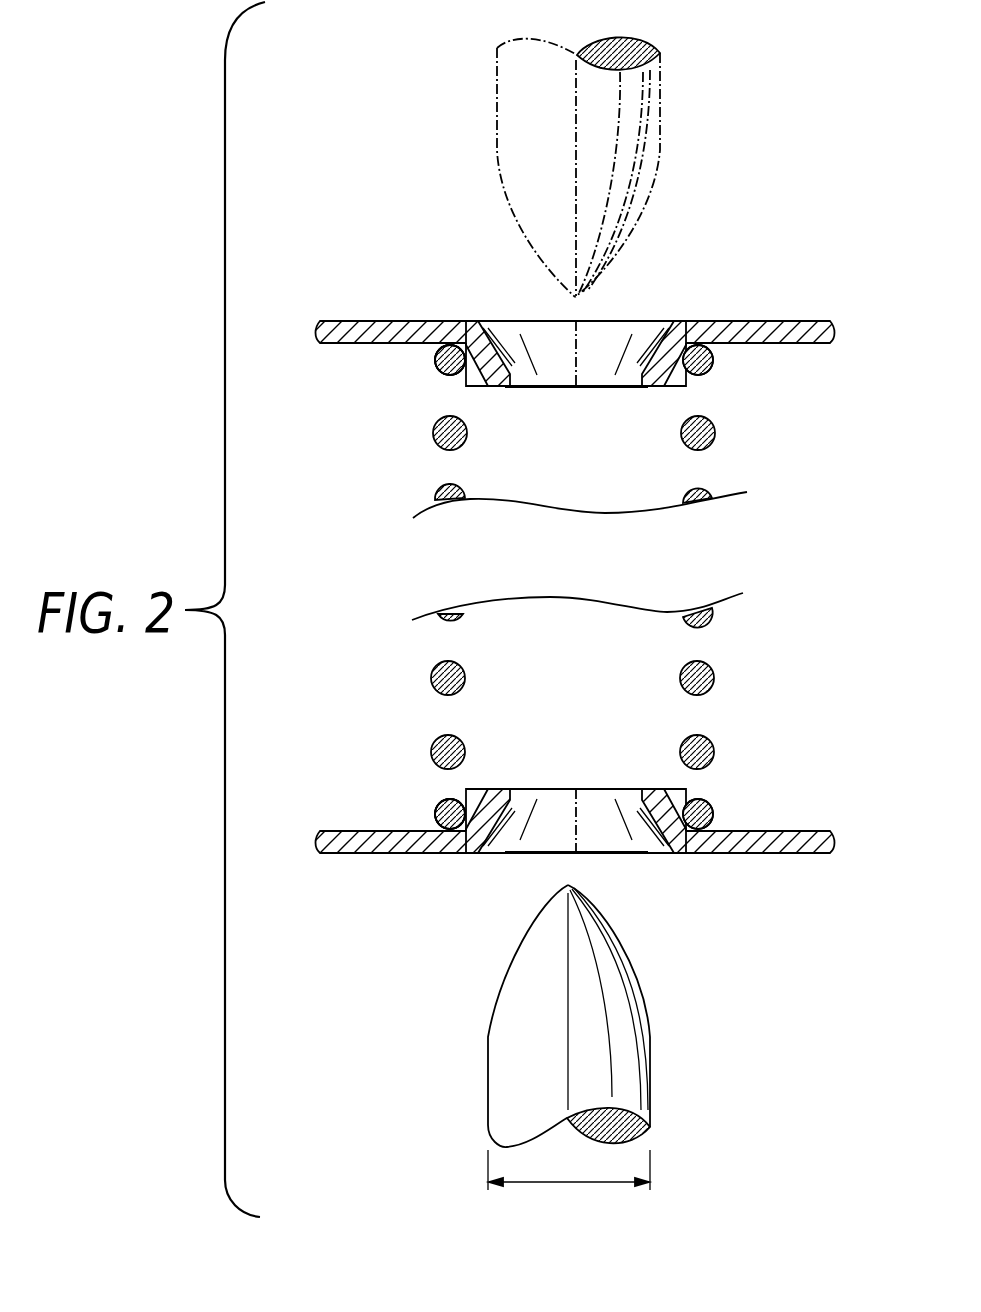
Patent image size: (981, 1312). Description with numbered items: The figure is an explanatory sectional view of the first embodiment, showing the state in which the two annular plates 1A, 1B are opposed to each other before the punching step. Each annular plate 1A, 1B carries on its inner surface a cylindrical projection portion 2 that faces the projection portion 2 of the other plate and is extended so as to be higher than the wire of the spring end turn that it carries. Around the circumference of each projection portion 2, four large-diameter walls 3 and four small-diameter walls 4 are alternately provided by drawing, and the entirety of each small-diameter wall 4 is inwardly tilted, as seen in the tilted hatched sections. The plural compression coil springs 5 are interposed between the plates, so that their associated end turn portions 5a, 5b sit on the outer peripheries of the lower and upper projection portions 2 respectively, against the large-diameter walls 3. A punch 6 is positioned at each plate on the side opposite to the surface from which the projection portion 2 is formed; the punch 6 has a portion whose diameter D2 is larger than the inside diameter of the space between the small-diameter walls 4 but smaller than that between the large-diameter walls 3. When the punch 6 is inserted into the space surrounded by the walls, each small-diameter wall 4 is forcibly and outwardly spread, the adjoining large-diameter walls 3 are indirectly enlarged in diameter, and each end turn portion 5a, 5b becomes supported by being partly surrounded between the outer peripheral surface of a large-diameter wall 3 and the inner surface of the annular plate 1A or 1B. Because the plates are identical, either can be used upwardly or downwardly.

The annular plate 1A is at (340, 831).
The annular plate 1B is at (335, 321).
The projection portion 2 is at (622, 345).
The large-diameter wall 3 is at (475, 382).
The small-diameter wall 4 is at (498, 386).
The compression coil spring 5 is at (435, 494).
The end turn portion 5a is at (430, 813).
The end turn portion 5b is at (433, 356).
The punch 6 is at (497, 112).
The diameter of punch portion D2 is at (569, 1186).